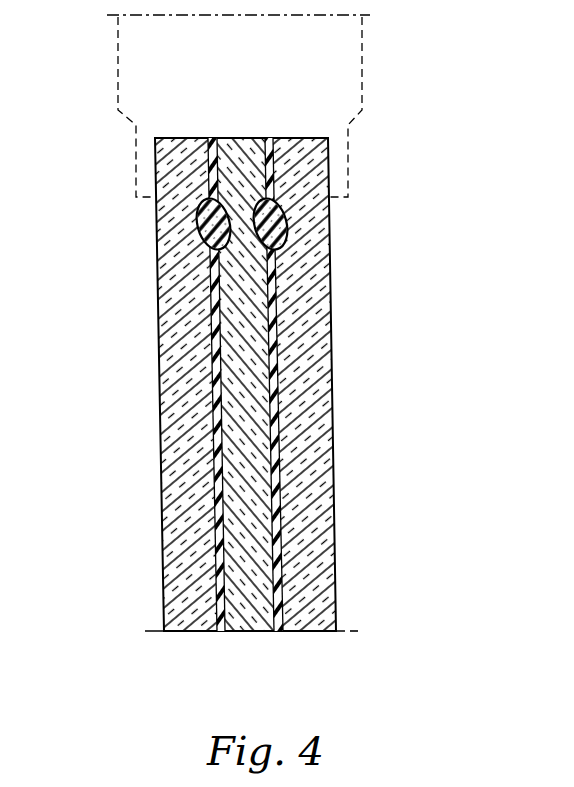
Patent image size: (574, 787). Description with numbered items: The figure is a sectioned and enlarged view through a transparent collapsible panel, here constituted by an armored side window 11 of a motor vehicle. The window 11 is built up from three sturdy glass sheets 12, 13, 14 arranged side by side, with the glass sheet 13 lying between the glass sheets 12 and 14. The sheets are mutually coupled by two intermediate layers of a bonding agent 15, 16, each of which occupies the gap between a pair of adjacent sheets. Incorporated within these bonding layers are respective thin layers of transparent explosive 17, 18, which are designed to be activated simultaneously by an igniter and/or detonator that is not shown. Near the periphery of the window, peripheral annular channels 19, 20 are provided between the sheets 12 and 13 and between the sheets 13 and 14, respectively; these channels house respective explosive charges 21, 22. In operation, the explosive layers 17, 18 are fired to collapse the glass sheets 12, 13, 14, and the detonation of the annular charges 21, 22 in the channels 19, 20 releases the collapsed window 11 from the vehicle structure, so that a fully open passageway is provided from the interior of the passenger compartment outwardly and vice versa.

The armored side window 11 is at (105, 345).
The glass sheet 12 is at (318, 623).
The glass sheet 13 is at (245, 623).
The glass sheet 14 is at (193, 623).
The intermediate layer of bonding agent 15 is at (283, 447).
The intermediate layer of bonding agent 16 is at (213, 421).
The thin layer of transparent explosive 17 is at (280, 315).
The thin layer of transparent explosive 18 is at (215, 565).
The peripheral annular channel 19 is at (287, 225).
The peripheral annular channel 20 is at (198, 224).
The explosive charge 21 is at (268, 137).
The explosive charge 22 is at (214, 137).